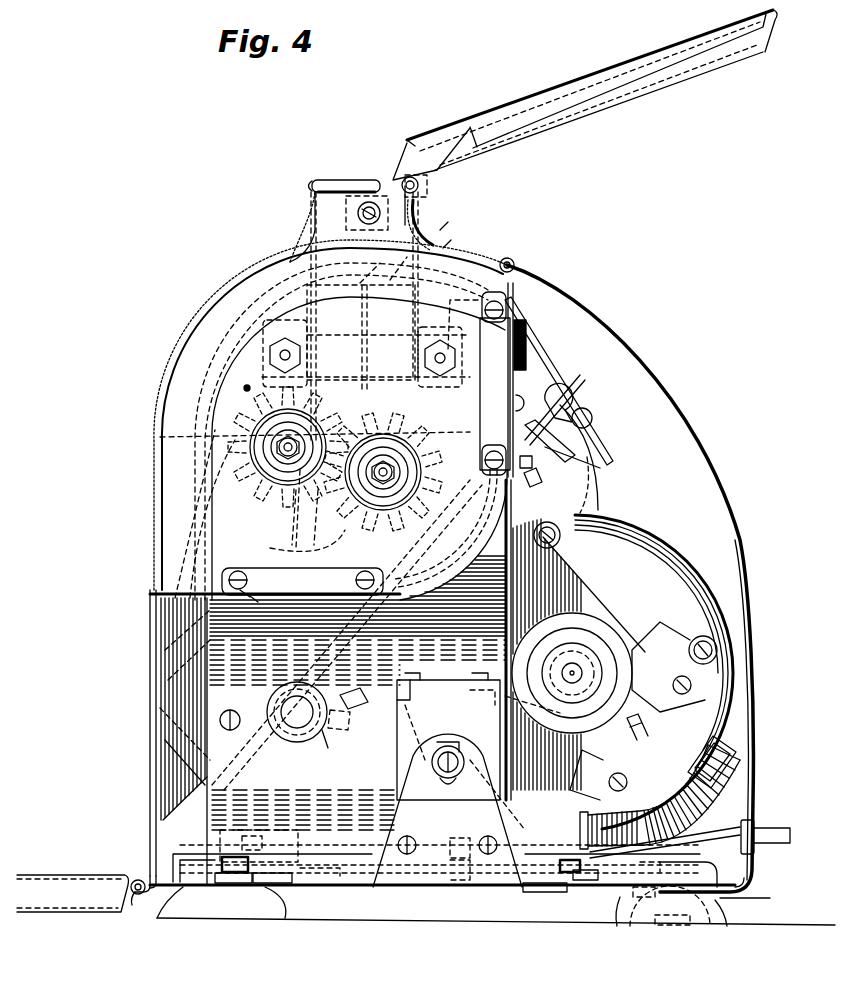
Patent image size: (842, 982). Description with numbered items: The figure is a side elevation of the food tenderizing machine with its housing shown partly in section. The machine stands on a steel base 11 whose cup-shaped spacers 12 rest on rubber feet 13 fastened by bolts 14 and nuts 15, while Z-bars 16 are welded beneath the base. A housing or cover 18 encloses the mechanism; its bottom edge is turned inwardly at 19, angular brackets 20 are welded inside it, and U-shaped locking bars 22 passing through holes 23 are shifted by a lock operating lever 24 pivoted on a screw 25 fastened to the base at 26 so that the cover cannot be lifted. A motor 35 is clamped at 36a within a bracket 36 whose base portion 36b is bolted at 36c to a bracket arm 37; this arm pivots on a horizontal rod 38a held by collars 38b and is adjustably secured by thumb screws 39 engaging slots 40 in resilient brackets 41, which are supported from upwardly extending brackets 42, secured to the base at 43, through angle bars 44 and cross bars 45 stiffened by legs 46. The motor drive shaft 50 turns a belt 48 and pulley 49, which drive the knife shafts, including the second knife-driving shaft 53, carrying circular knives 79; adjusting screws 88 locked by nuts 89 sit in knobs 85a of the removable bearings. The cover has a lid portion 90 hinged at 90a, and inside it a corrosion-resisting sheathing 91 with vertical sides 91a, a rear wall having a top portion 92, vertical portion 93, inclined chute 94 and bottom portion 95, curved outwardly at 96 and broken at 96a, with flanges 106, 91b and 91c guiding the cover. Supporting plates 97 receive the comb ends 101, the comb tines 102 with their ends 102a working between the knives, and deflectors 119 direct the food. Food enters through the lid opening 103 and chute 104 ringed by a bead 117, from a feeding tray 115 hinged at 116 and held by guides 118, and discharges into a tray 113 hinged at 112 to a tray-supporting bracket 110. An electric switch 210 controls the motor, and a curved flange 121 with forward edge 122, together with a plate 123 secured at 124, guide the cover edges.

The base 11 is at (720, 868).
The cup-shaped spacers 12 is at (634, 892).
The rubber feet 13 is at (728, 910).
The bolts 14 is at (640, 925).
The nuts 15 is at (678, 840).
The Z-bars 16 is at (285, 887).
The housing or cover 18 is at (620, 358).
The inwardly turned bottom edge 19 is at (750, 887).
The angular brackets 20 is at (750, 812).
The U-shaped locking bars 22 is at (232, 880).
The holes 23 is at (247, 885).
The lock operating lever 24 is at (770, 898).
The screw 25 is at (456, 880).
The fastening of screw to base 26 is at (486, 836).
The motor 35 is at (642, 540).
The bracket 36 is at (530, 484).
The motor clamp 36a is at (648, 732).
The base portion of bracket 36b is at (538, 480).
The bolts 36c is at (532, 460).
The bracket arm 37 is at (352, 721).
The horizontally extending rod 38a is at (290, 732).
The collars 38b is at (325, 752).
The thumb screws 39 is at (590, 408).
The slots 40 is at (580, 447).
The brackets 41 is at (555, 375).
The upwardly extending brackets 42 is at (352, 840).
The securing points 43 is at (345, 836).
The angle bars 44 is at (395, 880).
The cross bars 45 is at (530, 382).
The angular flanges or legs 46 is at (503, 396).
The belt 48 is at (600, 482).
The pulley 49 is at (595, 462).
The motor drive shaft 50 is at (578, 670).
The second knife-driving shaft 53 is at (298, 500).
The circular knives 79 is at (190, 437).
The knob 85a is at (282, 470).
The adjusting screws 88 is at (278, 450).
The nuts 89 is at (280, 455).
The lid portion 90 is at (185, 392).
The hinge 90a is at (515, 262).
The sheathing 91 is at (330, 600).
The sides of sheath 91a is at (212, 345).
The forwardly extending flange portion 91b is at (152, 590).
The laterally extending flange portion 91c is at (178, 625).
The top portion of rear wall 92 is at (488, 262).
The vertical portion of rear wall 93 is at (478, 312).
The chute or inclined portion 94 is at (160, 720).
The bottom portion of rear wall 95 is at (148, 870).
The outward curve of sheath sides 96 is at (243, 380).
The break in front edges 96a is at (150, 572).
The supporting plates or brackets 97 is at (258, 290).
The comb ends 101 is at (308, 340).
The tines or teeth 102 is at (316, 378).
The tine ends 102a is at (310, 548).
The opening 103 is at (345, 180).
The chute 104 is at (315, 212).
The flanges 106 is at (160, 742).
The tray-supporting bracket 110 is at (140, 900).
The hinge connection 112 is at (136, 896).
The tray 113 is at (70, 914).
The feeding tray 115 is at (565, 115).
The hinge 116 is at (372, 200).
The bead 117 is at (314, 178).
The guides 118 is at (425, 183).
The angular end plates or deflectors 119 is at (448, 226).
The outwardly extending flange 121 is at (450, 570).
The forward edge of flange 122 is at (258, 568).
The plate or bracket 123 is at (168, 680).
The securing point 124 is at (165, 650).
The electric switch 210 is at (461, 751).